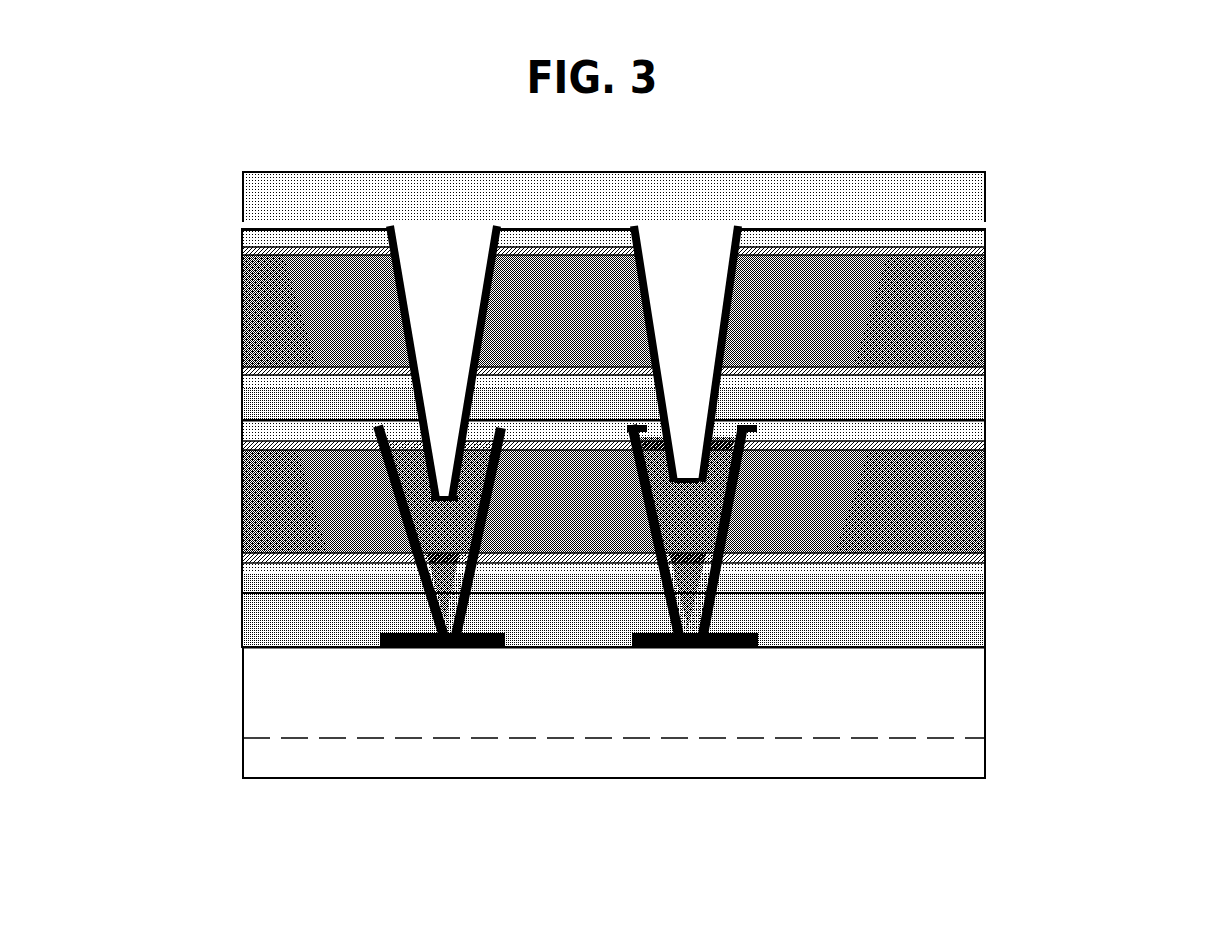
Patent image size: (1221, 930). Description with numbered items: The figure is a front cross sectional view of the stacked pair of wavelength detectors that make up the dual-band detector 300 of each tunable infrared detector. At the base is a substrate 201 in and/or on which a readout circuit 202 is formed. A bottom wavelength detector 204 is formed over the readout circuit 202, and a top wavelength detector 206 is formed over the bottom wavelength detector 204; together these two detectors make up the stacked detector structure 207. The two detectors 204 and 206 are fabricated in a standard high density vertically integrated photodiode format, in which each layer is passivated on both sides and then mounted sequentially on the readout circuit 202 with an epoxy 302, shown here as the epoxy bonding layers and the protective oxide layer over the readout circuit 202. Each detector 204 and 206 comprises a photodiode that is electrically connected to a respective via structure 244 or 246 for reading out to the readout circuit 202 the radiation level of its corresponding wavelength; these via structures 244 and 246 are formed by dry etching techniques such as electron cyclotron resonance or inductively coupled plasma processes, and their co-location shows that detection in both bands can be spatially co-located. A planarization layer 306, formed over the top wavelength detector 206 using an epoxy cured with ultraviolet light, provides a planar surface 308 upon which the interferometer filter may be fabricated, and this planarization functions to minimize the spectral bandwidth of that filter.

The semiconductor device 300 is at (278, 104).
The planar surface 308 is at (903, 172).
The planarization layer 306 is at (997, 192).
The via structure 244 is at (431, 243).
The via structure 246 is at (700, 243).
The top wavelength detector 206 is at (1003, 237).
The bottom wavelength detector 204 is at (1003, 428).
The stacked device layers 207 is at (1113, 237).
The epoxy 302 is at (268, 419).
The readout circuit 202 is at (997, 687).
The substrate 201 is at (997, 748).